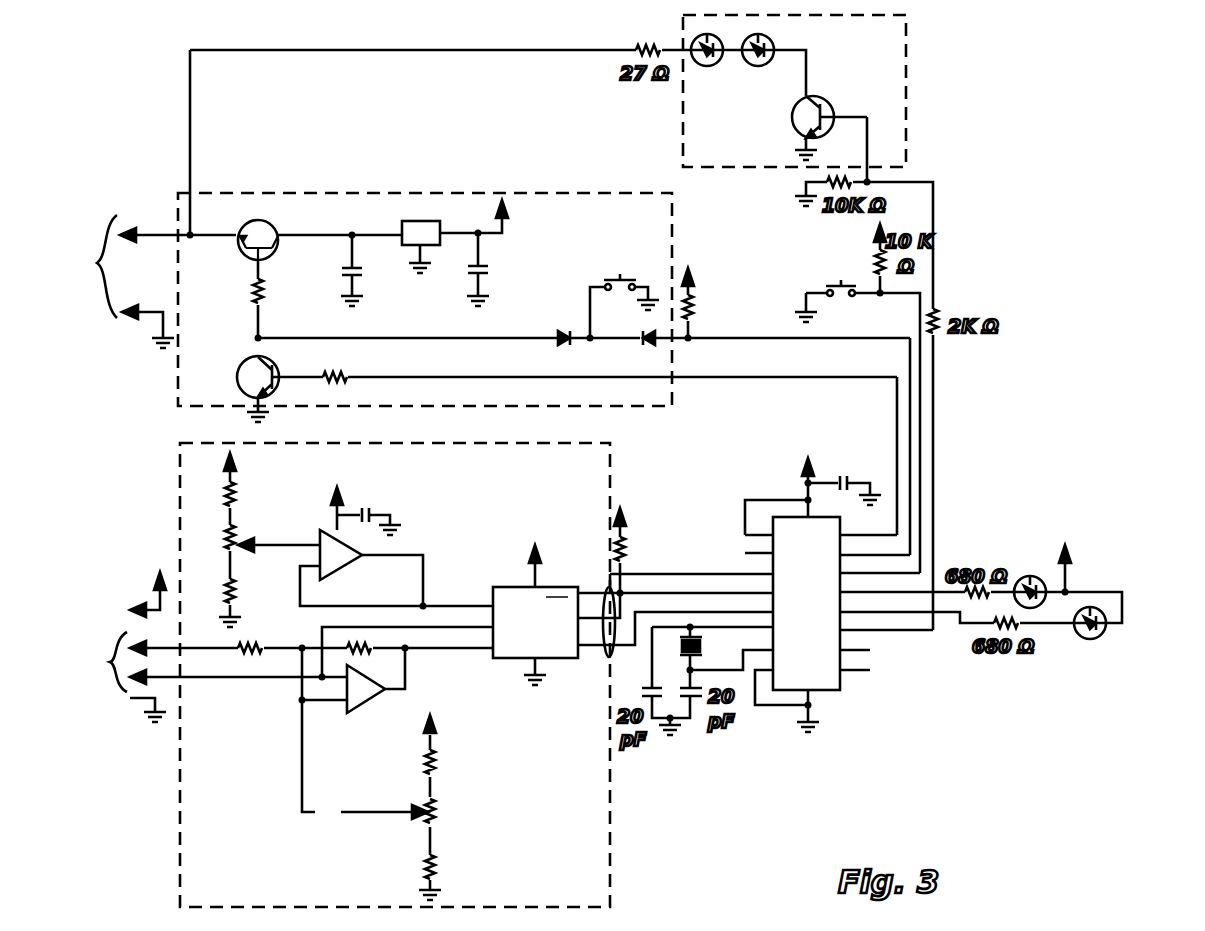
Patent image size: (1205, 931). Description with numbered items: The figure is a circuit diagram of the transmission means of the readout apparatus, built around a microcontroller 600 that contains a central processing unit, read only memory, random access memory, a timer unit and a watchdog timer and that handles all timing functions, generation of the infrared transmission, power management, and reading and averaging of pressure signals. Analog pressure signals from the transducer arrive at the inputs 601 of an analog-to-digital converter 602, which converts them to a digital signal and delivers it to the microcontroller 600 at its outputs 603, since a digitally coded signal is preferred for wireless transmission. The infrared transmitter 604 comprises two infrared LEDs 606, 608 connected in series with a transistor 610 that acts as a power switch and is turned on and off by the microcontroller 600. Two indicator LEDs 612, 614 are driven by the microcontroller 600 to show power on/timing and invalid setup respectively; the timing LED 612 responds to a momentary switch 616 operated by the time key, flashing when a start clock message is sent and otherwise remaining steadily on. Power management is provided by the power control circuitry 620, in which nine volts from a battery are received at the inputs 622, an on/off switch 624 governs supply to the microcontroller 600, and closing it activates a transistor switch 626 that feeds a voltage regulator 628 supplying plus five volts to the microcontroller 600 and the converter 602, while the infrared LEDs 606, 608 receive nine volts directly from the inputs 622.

The microcontroller 600 is at (840, 680).
The inputs 601 is at (110, 662).
The analog-to-digital converter 602 is at (451, 675).
The outputs 603 is at (606, 652).
The infrared transmitter 604 is at (848, 91).
The infrared LED 606 is at (710, 67).
The infrared LED 608 is at (758, 67).
The transistor 610 is at (815, 97).
The LED 612 is at (1035, 574).
The LED 614 is at (1098, 640).
The switch 616 is at (838, 283).
The power control circuitry 620 is at (544, 264).
The inputs 622 is at (95, 263).
The on/off switch 624 is at (620, 278).
The transistor switch 626 is at (268, 220).
The voltage regulator 628 is at (403, 247).